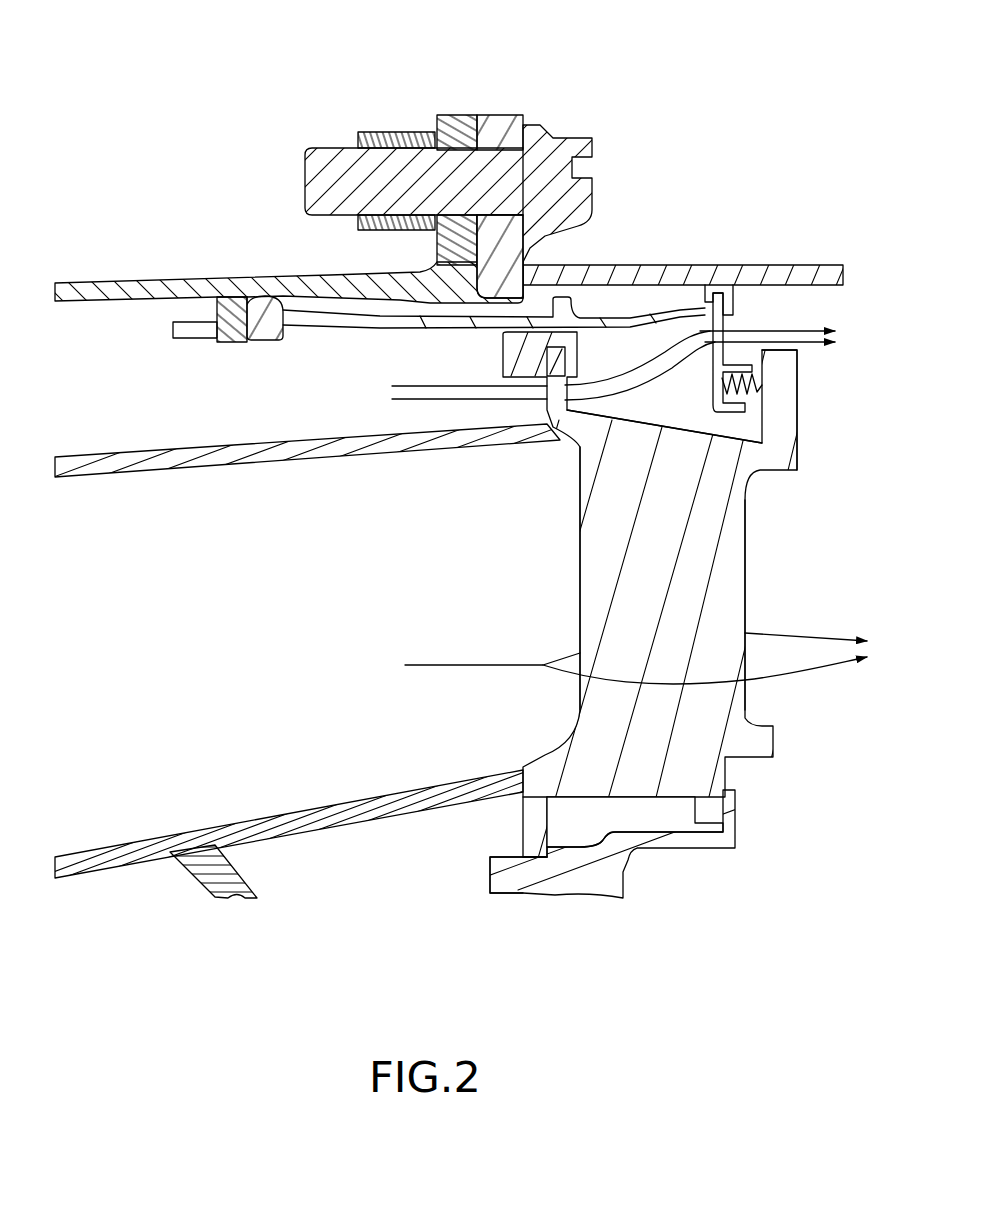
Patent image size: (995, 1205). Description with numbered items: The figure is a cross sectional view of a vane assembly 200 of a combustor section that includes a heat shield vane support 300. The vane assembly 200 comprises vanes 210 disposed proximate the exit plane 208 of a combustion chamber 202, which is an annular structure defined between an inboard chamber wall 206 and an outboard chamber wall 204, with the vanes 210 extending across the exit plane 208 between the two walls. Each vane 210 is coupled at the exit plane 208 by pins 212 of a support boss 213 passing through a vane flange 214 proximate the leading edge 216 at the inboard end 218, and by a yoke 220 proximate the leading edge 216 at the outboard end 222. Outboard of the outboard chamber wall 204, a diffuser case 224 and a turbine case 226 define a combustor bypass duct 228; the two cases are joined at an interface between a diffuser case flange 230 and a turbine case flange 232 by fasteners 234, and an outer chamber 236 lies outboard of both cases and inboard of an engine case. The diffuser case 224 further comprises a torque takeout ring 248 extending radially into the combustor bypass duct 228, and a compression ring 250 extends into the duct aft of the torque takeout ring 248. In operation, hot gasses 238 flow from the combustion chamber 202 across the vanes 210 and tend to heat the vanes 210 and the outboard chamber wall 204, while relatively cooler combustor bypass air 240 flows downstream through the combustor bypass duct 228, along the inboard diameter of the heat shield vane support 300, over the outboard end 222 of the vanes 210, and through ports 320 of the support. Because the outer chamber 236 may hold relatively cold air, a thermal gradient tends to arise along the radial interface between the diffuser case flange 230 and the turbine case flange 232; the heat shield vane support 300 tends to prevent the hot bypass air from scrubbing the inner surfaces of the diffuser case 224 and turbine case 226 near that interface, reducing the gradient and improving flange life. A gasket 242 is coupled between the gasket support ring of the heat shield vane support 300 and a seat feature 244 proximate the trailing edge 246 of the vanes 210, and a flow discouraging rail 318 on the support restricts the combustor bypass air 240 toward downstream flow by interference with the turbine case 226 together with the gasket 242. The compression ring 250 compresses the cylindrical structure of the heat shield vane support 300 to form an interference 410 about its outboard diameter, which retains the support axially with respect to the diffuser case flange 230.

The vane assembly 200 is at (716, 108).
The combustion chamber 202 is at (202, 732).
The outboard chamber wall 204 is at (152, 478).
The inboard chamber wall 206 is at (236, 825).
The exit plane 208 is at (520, 708).
The vane 210 is at (666, 617).
The pin 212 is at (508, 880).
The support boss 213 is at (583, 878).
The vane flange 214 is at (525, 825).
The leading edge 216 is at (578, 562).
The inboard end 218 is at (606, 800).
The yoke 220 is at (568, 364).
The outboard end 222 is at (680, 416).
The diffuser case 224 is at (97, 282).
The turbine case 226 is at (775, 263).
The combustor bypass duct 228 is at (89, 400).
The diffuser case flange 230 is at (449, 116).
The turbine case flange 232 is at (497, 120).
The fastener 234 is at (555, 137).
The outer chamber 236 is at (178, 177).
The hot gasses 238 is at (440, 664).
The combustor bypass air 240 is at (393, 399).
The gasket 242 is at (762, 385).
The seat feature 244 is at (786, 426).
The trailing edge 246 is at (748, 506).
The torque takeout ring 248 is at (232, 330).
The compression ring 250 is at (276, 294).
The heat shield vane support 300 is at (372, 336).
The flow discouraging rail 318 is at (706, 300).
The port 320 is at (720, 333).
The interference 410 is at (283, 342).